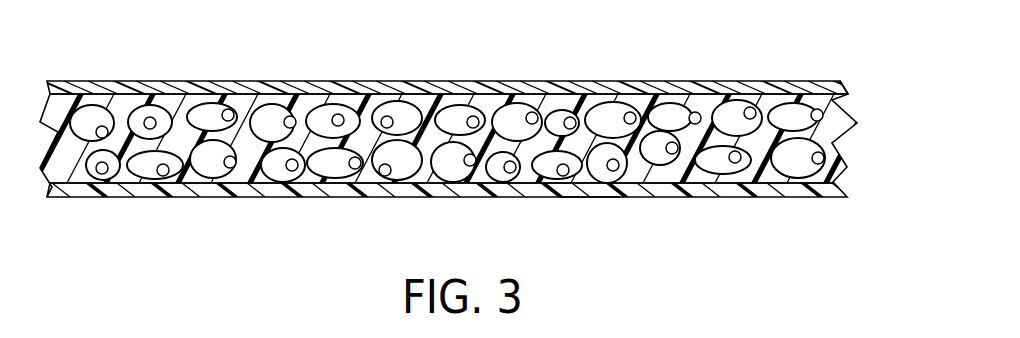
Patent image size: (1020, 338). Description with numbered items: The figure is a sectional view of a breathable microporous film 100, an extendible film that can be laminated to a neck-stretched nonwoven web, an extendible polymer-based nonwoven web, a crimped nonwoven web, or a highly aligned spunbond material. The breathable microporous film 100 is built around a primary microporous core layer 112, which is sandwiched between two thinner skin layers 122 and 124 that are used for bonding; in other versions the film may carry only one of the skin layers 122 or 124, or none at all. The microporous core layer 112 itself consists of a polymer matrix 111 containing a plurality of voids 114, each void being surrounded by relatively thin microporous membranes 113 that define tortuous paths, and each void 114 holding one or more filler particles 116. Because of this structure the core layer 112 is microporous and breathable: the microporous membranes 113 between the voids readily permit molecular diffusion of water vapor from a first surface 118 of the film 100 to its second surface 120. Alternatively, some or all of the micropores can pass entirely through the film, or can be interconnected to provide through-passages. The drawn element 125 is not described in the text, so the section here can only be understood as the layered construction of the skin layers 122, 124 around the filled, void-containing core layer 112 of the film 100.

The breathable microporous film 100 is at (472, 130).
The polymer matrix 111 is at (830, 128).
The primary microporous core layer 112 is at (751, 112).
The microporous membranes 113 is at (448, 112).
The voids 114 is at (533, 196).
The filler particles 116 is at (582, 197).
The first surface 118 is at (96, 81).
The second surface 120 is at (118, 199).
The skin layer 122 is at (250, 88).
The skin layer 124 is at (267, 197).
The top surface 125 is at (836, 88).